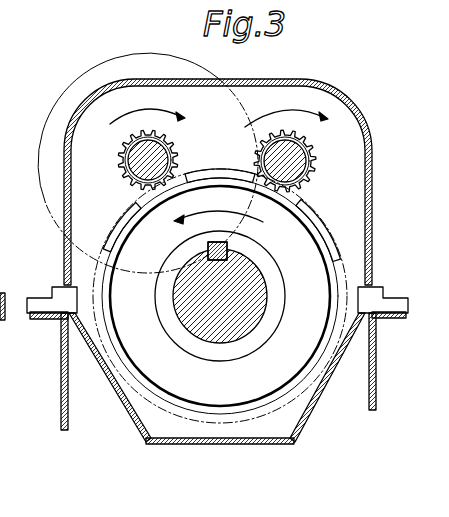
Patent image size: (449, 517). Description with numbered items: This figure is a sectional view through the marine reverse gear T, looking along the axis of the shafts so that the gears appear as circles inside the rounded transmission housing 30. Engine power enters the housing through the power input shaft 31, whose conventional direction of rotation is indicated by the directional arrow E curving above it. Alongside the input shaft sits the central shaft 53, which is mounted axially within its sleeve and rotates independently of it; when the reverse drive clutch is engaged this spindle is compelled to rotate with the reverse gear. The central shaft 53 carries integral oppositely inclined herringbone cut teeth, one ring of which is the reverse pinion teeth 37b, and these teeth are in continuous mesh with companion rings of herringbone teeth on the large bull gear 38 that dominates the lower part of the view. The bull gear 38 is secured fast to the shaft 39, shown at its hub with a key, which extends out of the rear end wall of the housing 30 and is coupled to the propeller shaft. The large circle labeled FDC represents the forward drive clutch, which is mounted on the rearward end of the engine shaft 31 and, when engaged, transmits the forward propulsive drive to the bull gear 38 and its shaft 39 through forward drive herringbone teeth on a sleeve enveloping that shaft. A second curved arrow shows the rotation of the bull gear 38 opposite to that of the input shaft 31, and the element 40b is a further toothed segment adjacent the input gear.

The transmission housing 30 is at (160, 79).
The marine reverse gear T is at (282, 79).
The forward drive clutch FDC is at (90, 68).
The power input shaft 31 is at (140, 160).
The central shaft 53 is at (312, 152).
The bull gear 38 is at (213, 179).
The herringbone cut teeth 37b is at (300, 183).
The guide strip 40b is at (142, 185).
The shaft 39 is at (262, 272).
The directional arrow E is at (137, 118).